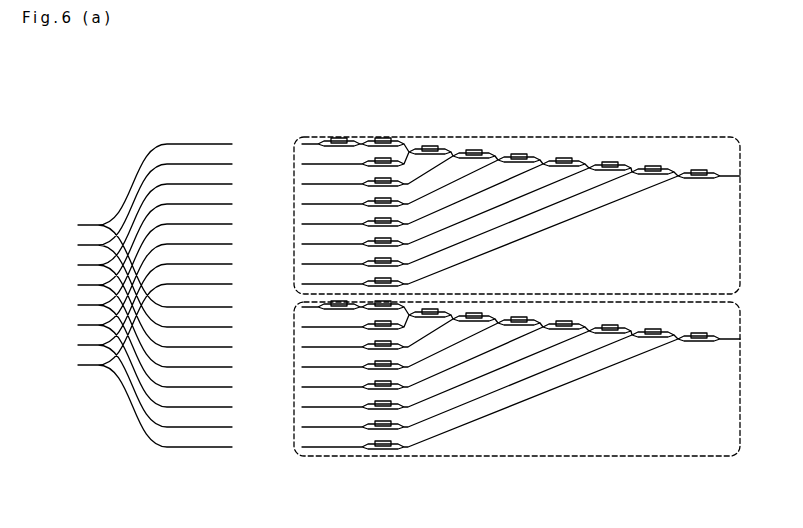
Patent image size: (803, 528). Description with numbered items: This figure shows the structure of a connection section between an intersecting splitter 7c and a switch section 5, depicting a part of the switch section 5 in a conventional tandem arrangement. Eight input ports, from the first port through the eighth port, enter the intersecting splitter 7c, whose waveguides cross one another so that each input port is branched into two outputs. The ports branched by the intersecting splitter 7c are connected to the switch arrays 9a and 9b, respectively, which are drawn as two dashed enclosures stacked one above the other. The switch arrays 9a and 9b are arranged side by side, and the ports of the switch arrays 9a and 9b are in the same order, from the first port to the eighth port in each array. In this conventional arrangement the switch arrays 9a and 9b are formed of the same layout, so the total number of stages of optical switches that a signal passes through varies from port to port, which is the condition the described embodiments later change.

The intersecting splitter 7c is at (167, 139).
The switch section 5 is at (375, 110).
The switch array 9a is at (517, 175).
The switch array 9b is at (403, 457).